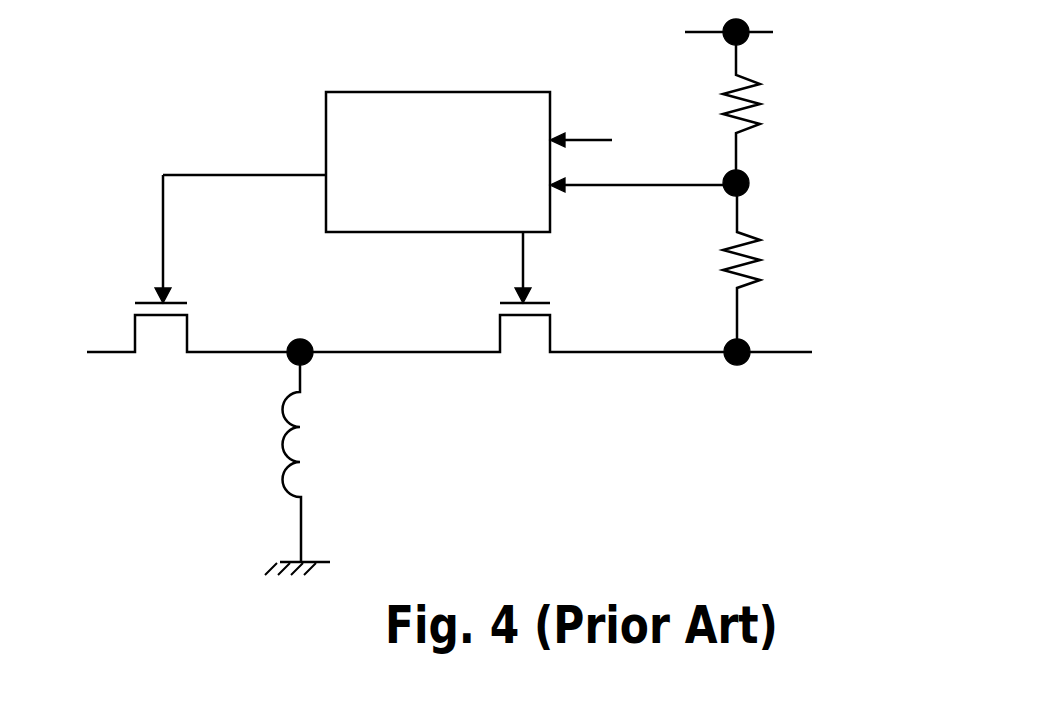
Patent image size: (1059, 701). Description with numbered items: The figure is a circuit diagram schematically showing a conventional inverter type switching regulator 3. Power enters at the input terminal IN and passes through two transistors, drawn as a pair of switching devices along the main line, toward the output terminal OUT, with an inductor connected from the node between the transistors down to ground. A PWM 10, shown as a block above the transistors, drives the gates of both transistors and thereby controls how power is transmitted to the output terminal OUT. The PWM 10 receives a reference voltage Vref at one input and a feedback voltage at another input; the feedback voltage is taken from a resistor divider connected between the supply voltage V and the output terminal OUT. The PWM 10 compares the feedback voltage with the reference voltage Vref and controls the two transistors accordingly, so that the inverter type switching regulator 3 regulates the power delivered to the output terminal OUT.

The inverter type switching regulator 3 is at (203, 111).
The PWM 10 is at (459, 220).
The input terminal IN is at (46, 355).
The output terminal OUT is at (868, 352).
The supply voltage + V is at (809, 31).
The reference voltage Vref is at (624, 144).